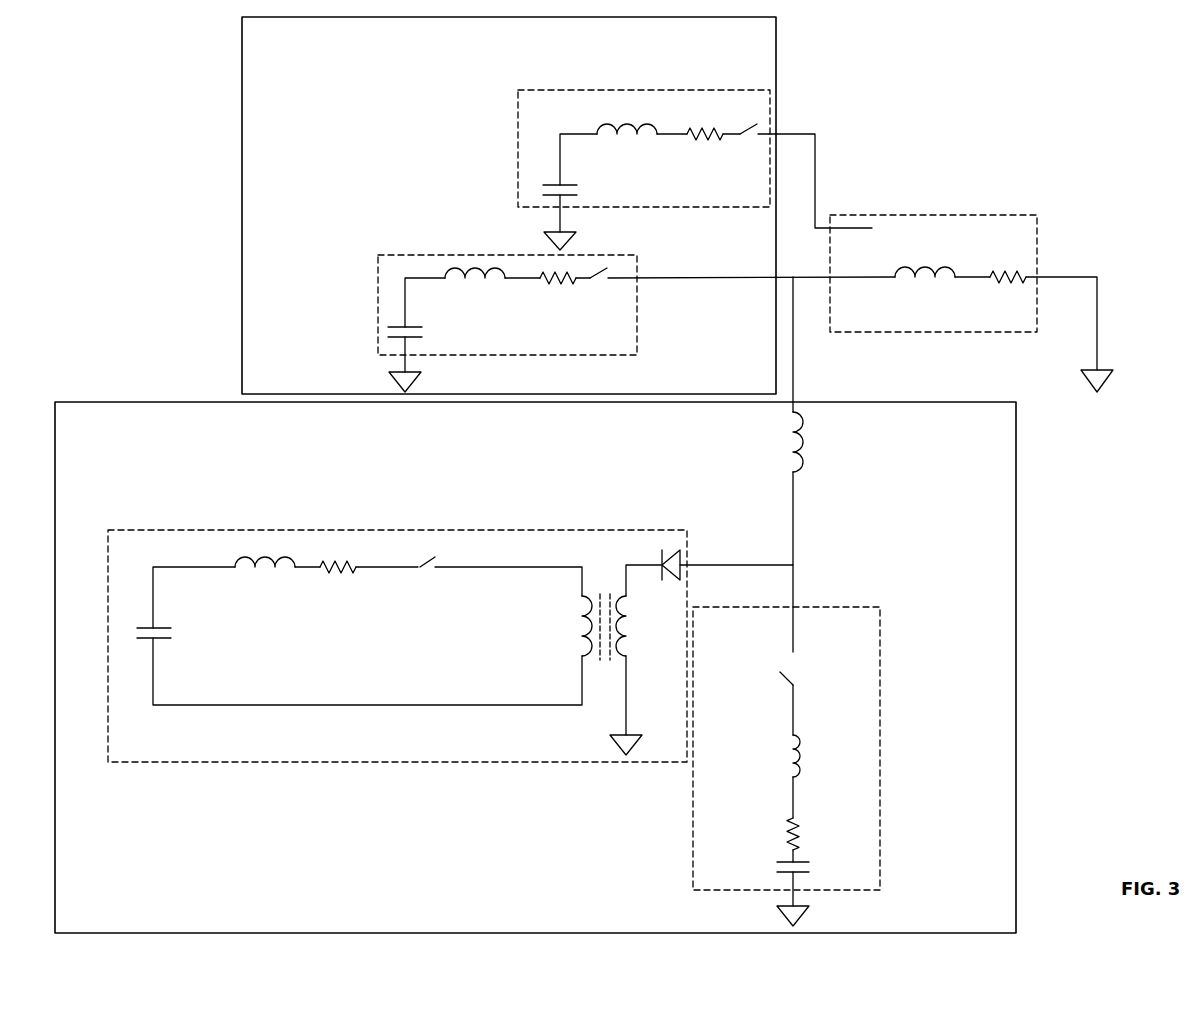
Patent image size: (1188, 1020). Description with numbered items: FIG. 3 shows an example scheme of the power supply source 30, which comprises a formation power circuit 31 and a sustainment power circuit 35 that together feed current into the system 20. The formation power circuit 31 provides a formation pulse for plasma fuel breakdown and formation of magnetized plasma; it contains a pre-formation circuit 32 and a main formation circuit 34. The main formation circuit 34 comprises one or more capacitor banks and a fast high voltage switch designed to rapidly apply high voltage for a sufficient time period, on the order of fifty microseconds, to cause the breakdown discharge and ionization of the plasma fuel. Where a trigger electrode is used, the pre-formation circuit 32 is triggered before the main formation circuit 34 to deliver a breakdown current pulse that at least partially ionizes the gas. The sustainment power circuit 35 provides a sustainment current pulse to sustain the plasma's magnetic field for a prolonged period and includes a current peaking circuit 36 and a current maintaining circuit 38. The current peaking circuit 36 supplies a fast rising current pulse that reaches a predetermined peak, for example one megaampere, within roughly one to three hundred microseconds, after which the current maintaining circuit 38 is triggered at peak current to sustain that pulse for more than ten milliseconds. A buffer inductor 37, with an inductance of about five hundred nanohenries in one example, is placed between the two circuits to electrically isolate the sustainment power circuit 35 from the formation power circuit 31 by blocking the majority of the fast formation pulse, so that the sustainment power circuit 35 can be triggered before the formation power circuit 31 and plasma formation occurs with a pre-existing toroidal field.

The power supply source 30 is at (1012, 121).
The formation power circuit 31 is at (743, 56).
The pre-formation circuit 32 is at (526, 110).
The main formation circuit 34 is at (383, 263).
The system 20 is at (1014, 236).
The sustainment power circuit 35 is at (994, 526).
The current peaking circuit 36 is at (844, 631).
The buffer inductor 37 is at (806, 443).
The current maintaining circuit 38 is at (137, 547).